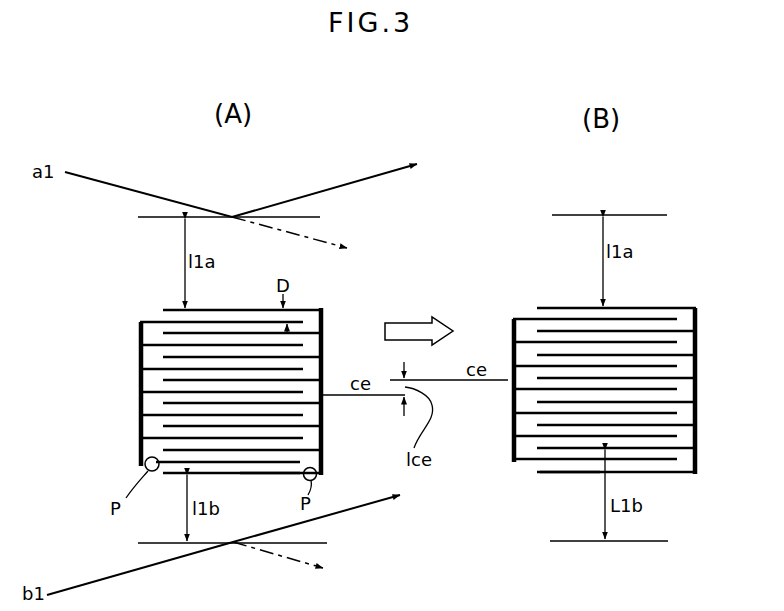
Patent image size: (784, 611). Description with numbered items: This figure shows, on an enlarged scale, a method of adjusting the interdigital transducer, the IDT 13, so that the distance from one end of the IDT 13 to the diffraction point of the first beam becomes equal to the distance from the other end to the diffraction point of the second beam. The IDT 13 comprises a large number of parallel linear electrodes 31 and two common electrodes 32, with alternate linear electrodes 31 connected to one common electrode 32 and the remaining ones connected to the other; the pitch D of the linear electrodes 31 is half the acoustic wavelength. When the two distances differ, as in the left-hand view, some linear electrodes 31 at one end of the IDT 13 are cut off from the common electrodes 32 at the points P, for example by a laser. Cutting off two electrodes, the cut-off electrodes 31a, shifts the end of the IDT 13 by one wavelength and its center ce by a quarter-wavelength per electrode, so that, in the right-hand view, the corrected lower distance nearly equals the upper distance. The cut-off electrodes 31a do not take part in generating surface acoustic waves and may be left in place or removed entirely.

The IDT 13 is at (130, 333).
The linear electrodes 31 is at (302, 335).
The common electrodes 32 is at (323, 348).
The cut-off electrodes 31a is at (248, 474).